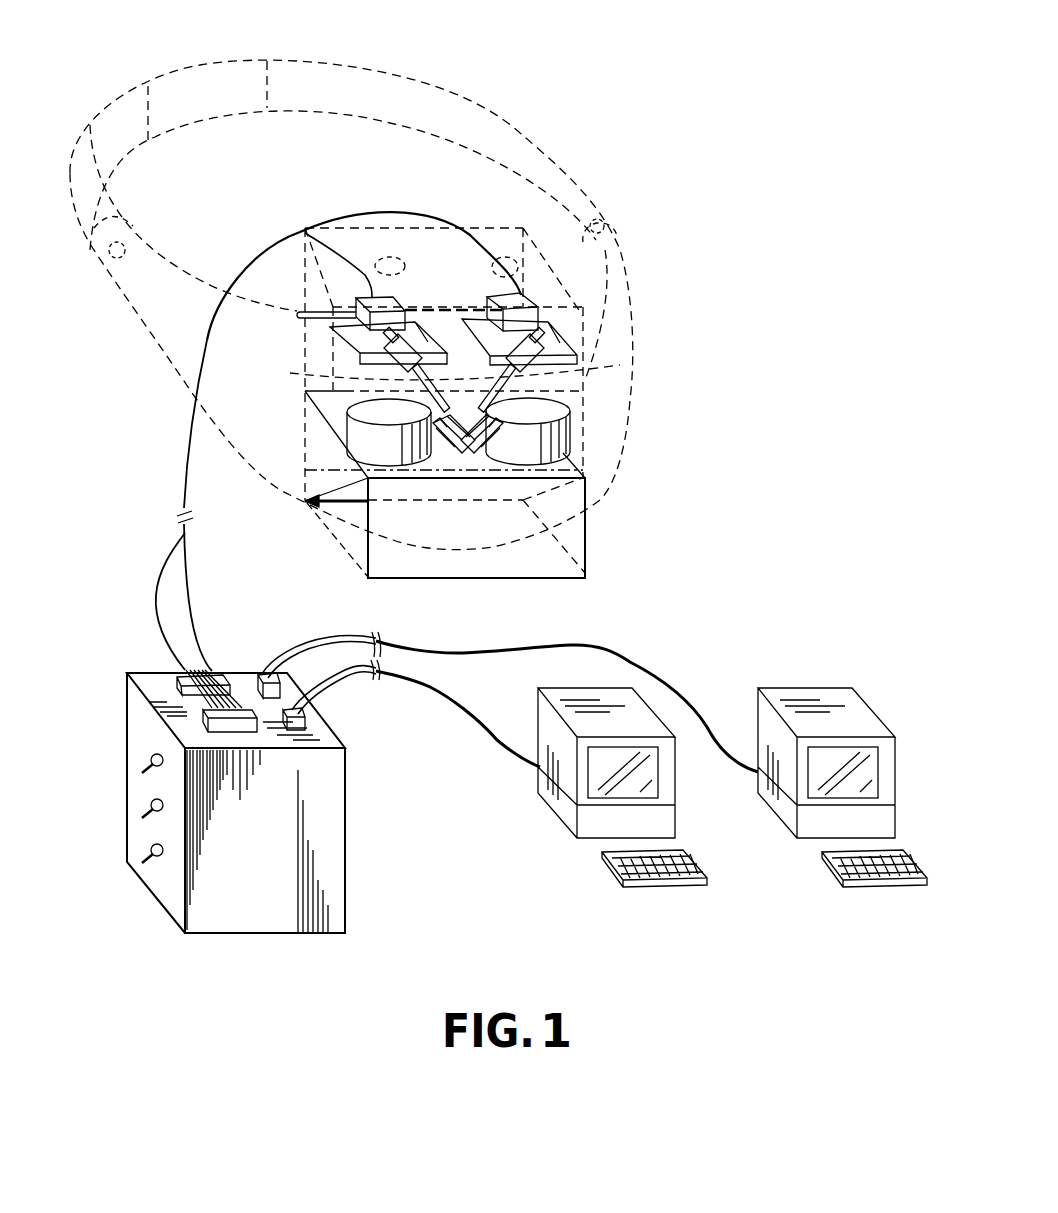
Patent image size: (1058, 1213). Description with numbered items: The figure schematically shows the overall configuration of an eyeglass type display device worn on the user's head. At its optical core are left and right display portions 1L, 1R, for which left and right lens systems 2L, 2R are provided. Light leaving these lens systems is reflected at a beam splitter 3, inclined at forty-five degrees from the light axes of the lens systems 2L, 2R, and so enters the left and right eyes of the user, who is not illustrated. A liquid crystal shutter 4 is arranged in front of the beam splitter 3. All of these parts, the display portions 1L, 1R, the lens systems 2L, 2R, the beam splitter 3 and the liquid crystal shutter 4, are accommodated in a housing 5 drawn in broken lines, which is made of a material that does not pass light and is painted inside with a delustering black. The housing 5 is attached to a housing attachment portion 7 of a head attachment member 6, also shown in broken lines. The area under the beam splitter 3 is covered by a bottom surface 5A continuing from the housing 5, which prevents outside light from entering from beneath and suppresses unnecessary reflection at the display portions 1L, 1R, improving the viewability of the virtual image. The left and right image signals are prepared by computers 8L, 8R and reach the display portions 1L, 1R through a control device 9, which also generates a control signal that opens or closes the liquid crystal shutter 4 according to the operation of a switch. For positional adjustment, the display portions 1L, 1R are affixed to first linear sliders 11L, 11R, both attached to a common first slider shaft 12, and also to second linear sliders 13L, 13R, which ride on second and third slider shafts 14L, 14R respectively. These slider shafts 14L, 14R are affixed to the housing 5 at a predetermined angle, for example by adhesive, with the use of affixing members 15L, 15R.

The right display portion 1R is at (440, 325).
The left display portion 1L is at (540, 338).
The right lens system 2R is at (350, 420).
The left lens system 2L is at (563, 427).
The beam splitter 3 is at (340, 497).
The liquid crystal shutter 4 is at (548, 576).
The housing 5 is at (585, 383).
The bottom surface 5A is at (345, 548).
The head attachment member 6 is at (560, 163).
The housing attachment portion 7 is at (600, 500).
The right computer 8R is at (540, 806).
The left computer 8L is at (790, 818).
The control device 9 is at (266, 935).
The right first linear slider 11R is at (360, 298).
The left first linear slider 11L is at (530, 305).
The first slider shaft 12 is at (298, 314).
The right second linear slider 13R is at (340, 350).
The left second linear slider 13L is at (600, 368).
The third slider shaft 14R is at (350, 402).
The second slider shaft 14L is at (520, 390).
The right affixing member 15R is at (452, 450).
The left affixing member 15L is at (478, 448).